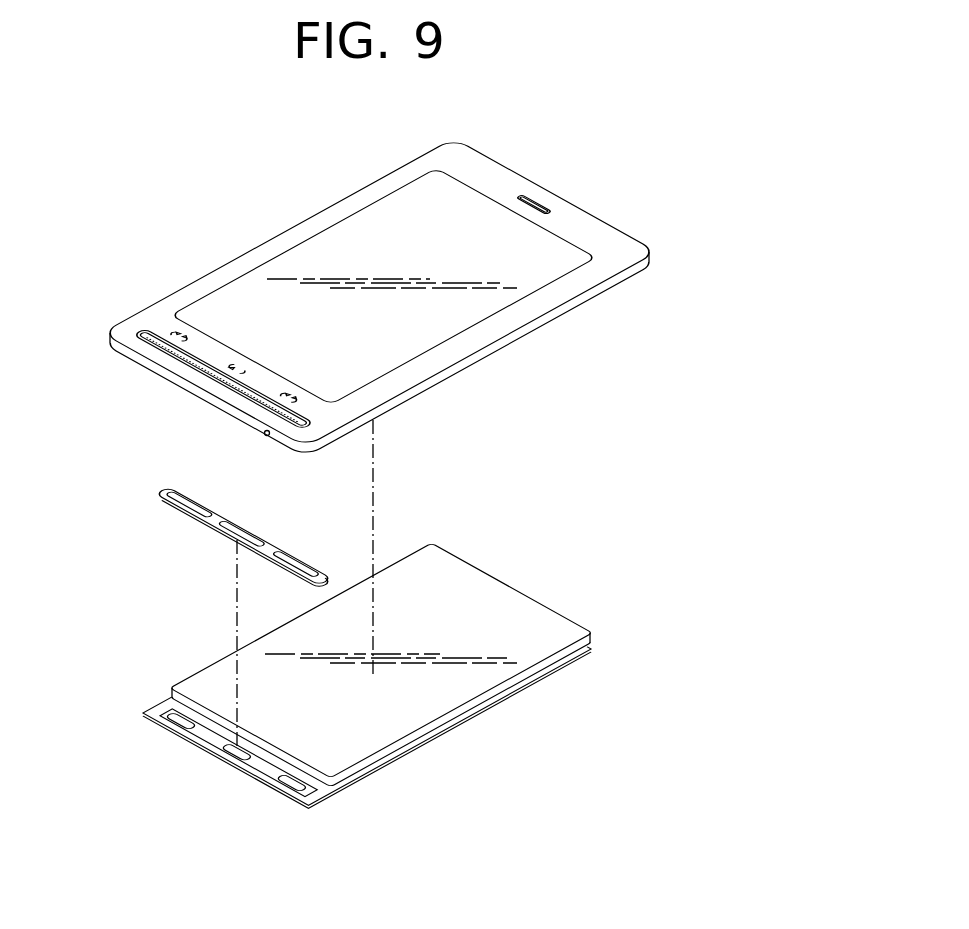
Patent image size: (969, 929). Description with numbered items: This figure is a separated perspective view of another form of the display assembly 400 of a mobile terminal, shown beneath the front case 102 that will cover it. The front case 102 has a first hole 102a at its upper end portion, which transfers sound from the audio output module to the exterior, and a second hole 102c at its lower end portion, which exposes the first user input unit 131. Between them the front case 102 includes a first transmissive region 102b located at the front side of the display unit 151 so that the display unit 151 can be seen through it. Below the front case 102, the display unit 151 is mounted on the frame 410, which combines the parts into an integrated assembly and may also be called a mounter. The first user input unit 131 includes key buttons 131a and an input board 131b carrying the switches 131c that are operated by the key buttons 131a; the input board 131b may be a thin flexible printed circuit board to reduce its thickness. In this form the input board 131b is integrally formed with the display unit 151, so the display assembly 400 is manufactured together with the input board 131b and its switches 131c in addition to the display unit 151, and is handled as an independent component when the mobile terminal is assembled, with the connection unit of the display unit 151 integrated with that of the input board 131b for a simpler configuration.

The front case 102 is at (603, 228).
The first hole 102a is at (540, 202).
The first transmissive region 102b is at (455, 195).
The second hole 102c is at (210, 372).
The first user input unit 131 is at (53, 523).
The key buttons 131a is at (210, 520).
The input board 131b is at (163, 705).
The switches 131c is at (173, 719).
The display unit 151 is at (470, 582).
The display assembly 400 is at (600, 603).
The frame 410 is at (455, 718).